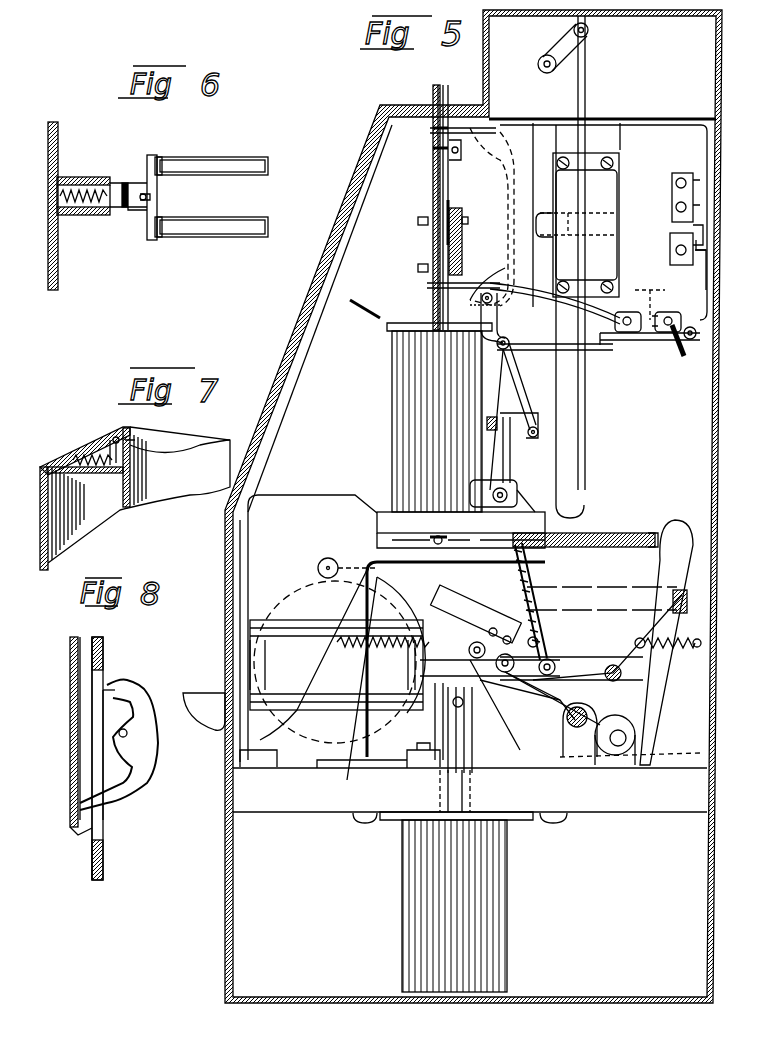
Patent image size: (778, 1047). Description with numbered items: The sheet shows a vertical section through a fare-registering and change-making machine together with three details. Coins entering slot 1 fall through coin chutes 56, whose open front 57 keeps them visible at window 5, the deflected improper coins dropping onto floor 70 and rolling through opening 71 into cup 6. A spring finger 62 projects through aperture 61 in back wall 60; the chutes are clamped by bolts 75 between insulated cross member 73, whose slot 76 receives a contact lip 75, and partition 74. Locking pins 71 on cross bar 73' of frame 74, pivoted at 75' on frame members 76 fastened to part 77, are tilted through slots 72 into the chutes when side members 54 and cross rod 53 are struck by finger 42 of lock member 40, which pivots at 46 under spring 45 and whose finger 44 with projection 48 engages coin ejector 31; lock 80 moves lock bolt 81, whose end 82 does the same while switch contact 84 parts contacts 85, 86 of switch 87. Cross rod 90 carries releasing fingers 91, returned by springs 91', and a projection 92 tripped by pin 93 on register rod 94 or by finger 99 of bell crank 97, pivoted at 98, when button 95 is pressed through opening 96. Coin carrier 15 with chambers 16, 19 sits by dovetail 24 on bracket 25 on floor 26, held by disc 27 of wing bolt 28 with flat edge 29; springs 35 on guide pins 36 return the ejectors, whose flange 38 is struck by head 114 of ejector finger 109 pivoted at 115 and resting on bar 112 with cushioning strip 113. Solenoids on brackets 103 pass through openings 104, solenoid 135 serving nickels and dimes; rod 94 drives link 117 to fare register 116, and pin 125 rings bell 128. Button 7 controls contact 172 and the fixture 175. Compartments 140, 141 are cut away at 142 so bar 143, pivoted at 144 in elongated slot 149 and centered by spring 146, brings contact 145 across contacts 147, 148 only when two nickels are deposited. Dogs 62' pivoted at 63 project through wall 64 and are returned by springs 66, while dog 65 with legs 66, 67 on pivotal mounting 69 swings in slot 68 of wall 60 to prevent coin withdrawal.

In FIG. 5, the slot 1 is at (438, 82).
In FIG. 5, the window 5 is at (312, 250).
In FIG. 5, the cup 6 is at (210, 695).
In FIG. 5, the manually operable button 7 is at (650, 293).
In FIG. 5, the coin carrier 15 is at (387, 383).
In FIG. 5, the coin chamber 16 is at (392, 440).
In FIG. 5, the coin chamber 19 is at (540, 497).
In FIG. 5, the dovetail 24 is at (464, 549).
In FIG. 5, the raised supporting bracket 25 is at (347, 790).
In FIG. 5, the floor 26 is at (680, 812).
In FIG. 5, the disc 27 is at (423, 512).
In FIG. 5, the wing bolt 28 is at (430, 545).
In FIG. 5, the flat edge 29 is at (438, 548).
In FIG. 5, the coin ejector 31 is at (655, 530).
In FIG. 5, the spring 35 is at (620, 533).
In FIG. 5, the guide pin 36 is at (600, 533).
In FIG. 5, the flange 38 is at (690, 535).
In FIG. 5, the coin ejector lock member 40 is at (512, 465).
In FIG. 5, the finger 42 is at (535, 420).
In FIG. 5, the finger 44 is at (522, 496).
In FIG. 5, the spring 45 is at (497, 420).
In FIG. 5, the pivot 46 is at (510, 487).
In FIG. 5, the projection 48 is at (550, 535).
In FIG. 5, the cross rod 53 is at (538, 436).
In FIG. 5, the side member 54 is at (538, 400).
In FIG. 5, the coin chute 56 is at (441, 174).
In FIG. 8, the coin chute 56 is at (82, 742).
In FIG. 5, the opening 57 is at (447, 213).
In FIG. 5, the back wall 60 is at (433, 131).
In FIG. 8, the back wall 60 is at (103, 866).
In FIG. 5, the aperture 61 is at (433, 151).
In FIG. 5, the spring finger 62 is at (469, 160).
In FIG. 7, the dog 62' is at (146, 438).
In FIG. 7, the pivot 63 is at (120, 430).
In FIG. 7, the wall 64 is at (132, 495).
In FIG. 7, the double-acting pivoted dog 65 is at (132, 455).
In FIG. 8, the double-acting pivoted dog 65 is at (150, 720).
In FIG. 7, the leg 66 is at (96, 473).
In FIG. 8, the leg 66 is at (110, 683).
In FIG. 8, the leg 67 is at (77, 836).
In FIG. 8, the slot 68 is at (107, 675).
In FIG. 8, the pivotal mounting 69 is at (127, 735).
In FIG. 5, the floor 70 is at (380, 315).
In FIG. 5, the pin 71 is at (455, 128).
In FIG. 5, the slot 72 is at (446, 100).
In FIG. 5, the insulated cross member 73 is at (474, 236).
In FIG. 5, the cross bar 73' is at (494, 196).
In FIG. 5, the partition member 74 is at (436, 196).
In FIG. 5, the bolt 75 is at (410, 249).
In FIG. 5, the pivot 75' is at (500, 281).
In FIG. 5, the frame member 76 is at (535, 152).
In FIG. 5, the part 77 is at (553, 118).
In FIG. 5, the lock 80 is at (610, 200).
In FIG. 5, the lock bolt 81 is at (578, 213).
In FIG. 5, the end 82 is at (545, 215).
In FIG. 5, the switch contact 84 is at (671, 197).
In FIG. 5, the contact 85 is at (694, 210).
In FIG. 5, the contact 86 is at (703, 220).
In FIG. 5, the switch 87 is at (727, 190).
In FIG. 5, the cross rod 90 is at (503, 350).
In FIG. 5, the releasing finger 91 is at (471, 306).
In FIG. 5, the spring 91' is at (480, 317).
In FIG. 5, the lateral projection 92 is at (564, 350).
In FIG. 5, the pin 93 is at (578, 285).
In FIG. 5, the register rod 94 is at (586, 478).
In FIG. 5, the button 95 is at (707, 250).
In FIG. 5, the opening 96 is at (706, 245).
In FIG. 5, the bell crank member 97 is at (700, 300).
In FIG. 5, the pivot 98 is at (697, 327).
In FIG. 5, the finger 99 is at (645, 340).
In FIG. 5, the bracket 103 is at (533, 825).
In FIG. 5, the opening 104 is at (478, 795).
In FIG. 5, the coin ejector finger 109 is at (690, 570).
In FIG. 5, the rest bar 112 is at (690, 603).
In FIG. 5, the cushioning strip 113 is at (688, 595).
In FIG. 5, the head 114 is at (685, 536).
In FIG. 5, the pivot 115 is at (627, 738).
In FIG. 5, the fare registering mechanism 116 is at (533, 51).
In FIG. 5, the link 117 is at (586, 56).
In FIG. 5, the pin 125 is at (705, 643).
In FIG. 5, the bell 128 is at (282, 610).
In FIG. 5, the solenoid 135 is at (310, 620).
In FIG. 6, the compartment member 140 is at (224, 155).
In FIG. 6, the compartment member 141 is at (266, 225).
In FIG. 6, the cut-away 142 is at (163, 158).
In FIG. 6, the swivelly mounted bar 143 is at (158, 200).
In FIG. 6, the pivot 144 is at (140, 208).
In FIG. 6, the contact 145 is at (125, 183).
In FIG. 6, the spring 146 is at (88, 215).
In FIG. 6, the contact 147 is at (96, 177).
In FIG. 6, the contact 148 is at (108, 215).
In FIG. 6, the elongated slot 149 is at (152, 196).
In FIG. 5, the contact 172 is at (627, 311).
In FIG. 5, the bracket 175 is at (671, 311).